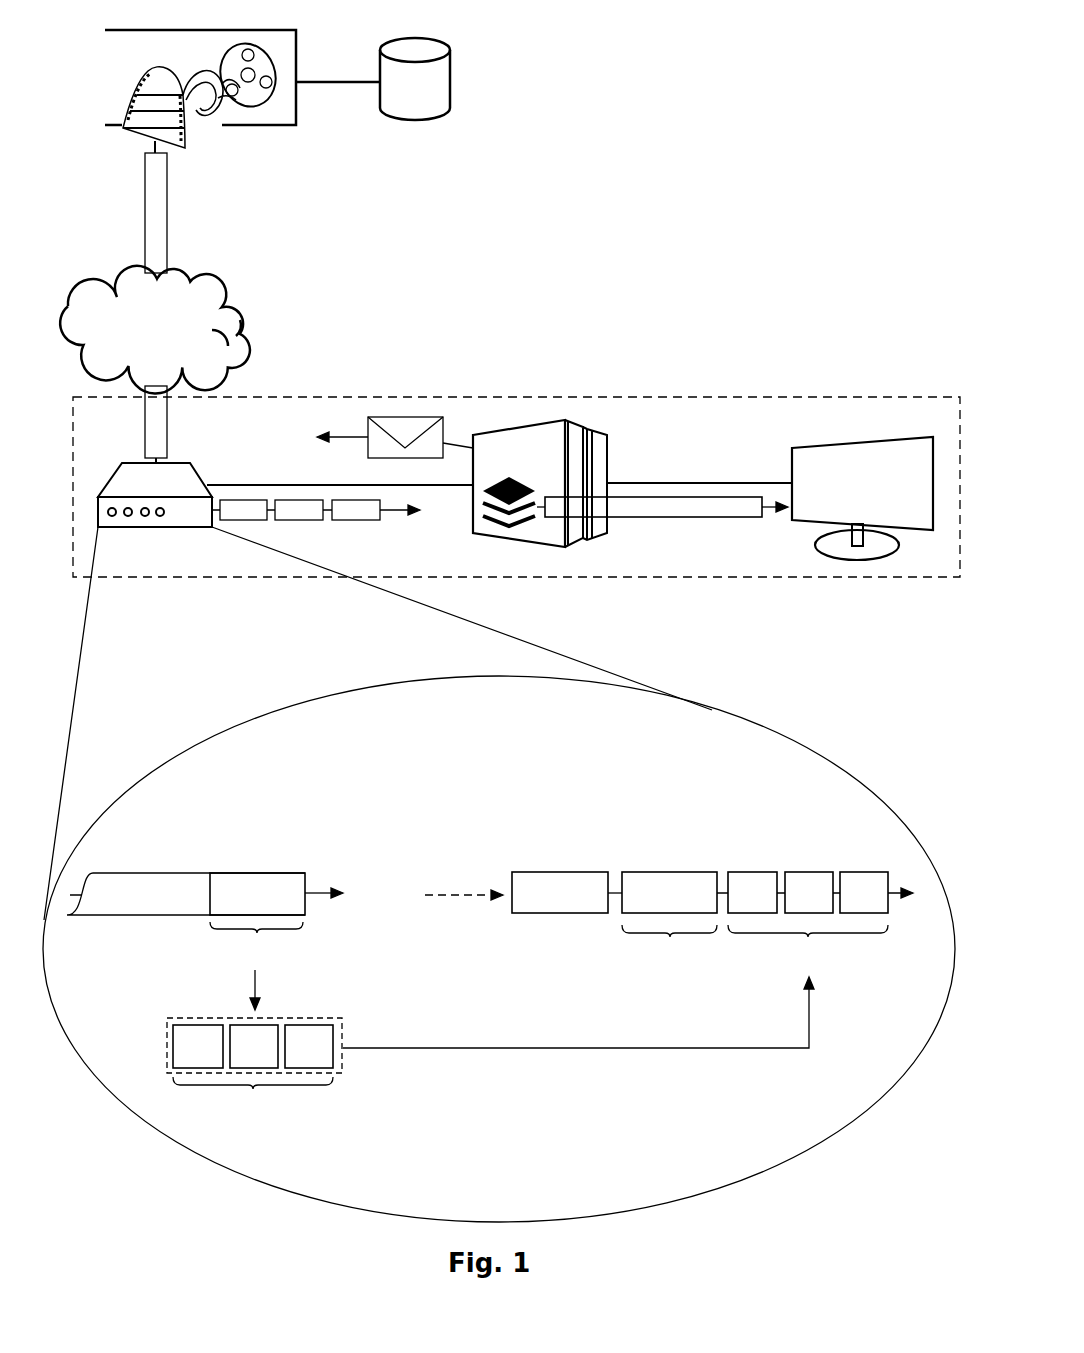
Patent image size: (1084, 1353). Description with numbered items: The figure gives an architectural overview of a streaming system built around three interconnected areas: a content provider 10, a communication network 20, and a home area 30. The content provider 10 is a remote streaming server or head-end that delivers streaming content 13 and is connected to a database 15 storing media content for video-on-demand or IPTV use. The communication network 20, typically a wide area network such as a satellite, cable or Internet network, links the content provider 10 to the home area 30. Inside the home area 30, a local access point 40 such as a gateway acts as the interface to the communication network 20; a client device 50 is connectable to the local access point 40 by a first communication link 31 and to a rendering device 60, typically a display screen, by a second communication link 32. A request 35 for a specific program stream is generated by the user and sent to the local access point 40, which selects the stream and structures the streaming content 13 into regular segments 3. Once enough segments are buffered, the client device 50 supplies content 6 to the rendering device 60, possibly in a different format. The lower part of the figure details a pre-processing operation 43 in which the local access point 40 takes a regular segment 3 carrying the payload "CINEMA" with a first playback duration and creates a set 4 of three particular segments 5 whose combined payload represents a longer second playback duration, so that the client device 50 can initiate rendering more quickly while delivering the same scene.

The content provider 10 is at (296, 110).
The database 15 is at (438, 93).
The streaming content 13 is at (158, 217).
The communication network 20 is at (167, 344).
The home area 30 is at (563, 397).
The first communication link 31 is at (277, 485).
The second communication link 32 is at (697, 482).
The request 35 is at (422, 425).
The local access point 40 is at (178, 518).
The regular segment 3 is at (247, 512).
The particular segment 5 is at (753, 882).
The client device 50 is at (553, 535).
The content 6 is at (632, 513).
The rendering device 60 is at (900, 512).
The set of particular segments 4 is at (167, 1037).
The pre-processing operation 43 is at (143, 1120).